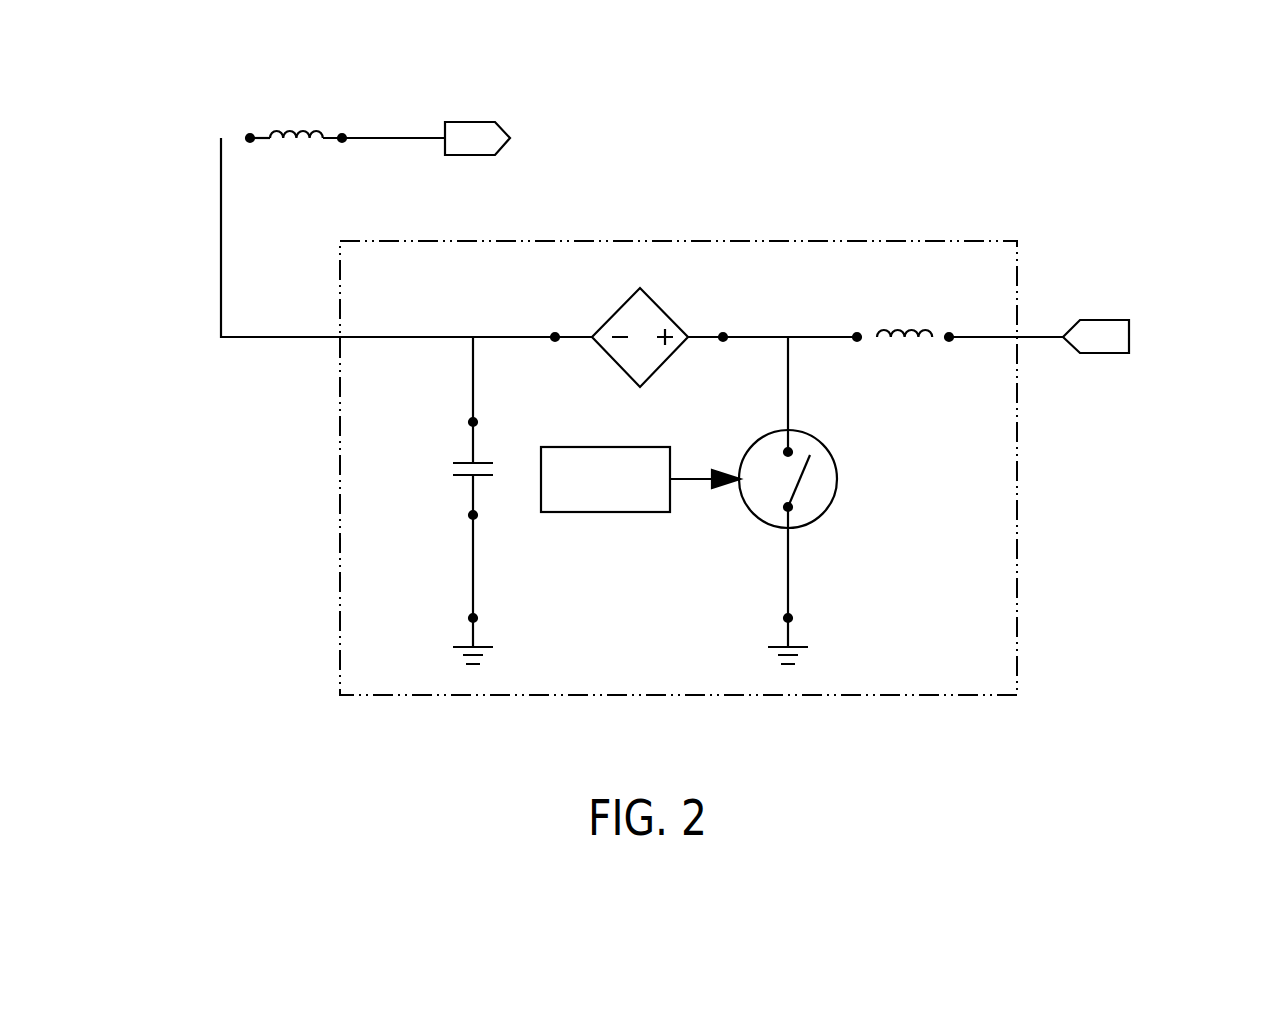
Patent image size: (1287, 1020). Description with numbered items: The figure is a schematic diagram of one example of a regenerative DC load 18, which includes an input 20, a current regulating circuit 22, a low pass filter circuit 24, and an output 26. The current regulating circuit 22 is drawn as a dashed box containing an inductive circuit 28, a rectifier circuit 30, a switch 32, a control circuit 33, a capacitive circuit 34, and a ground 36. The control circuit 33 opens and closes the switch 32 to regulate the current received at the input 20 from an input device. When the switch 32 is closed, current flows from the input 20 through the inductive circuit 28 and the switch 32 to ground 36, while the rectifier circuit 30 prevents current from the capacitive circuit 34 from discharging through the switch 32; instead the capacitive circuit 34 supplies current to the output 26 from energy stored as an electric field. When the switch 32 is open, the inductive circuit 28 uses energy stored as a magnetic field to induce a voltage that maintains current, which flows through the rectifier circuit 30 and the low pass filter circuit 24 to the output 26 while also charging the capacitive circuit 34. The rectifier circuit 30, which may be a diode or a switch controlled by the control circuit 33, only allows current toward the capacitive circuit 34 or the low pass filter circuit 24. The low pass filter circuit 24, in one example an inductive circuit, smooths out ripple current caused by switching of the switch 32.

The regenerative DC load 18 is at (1181, 95).
The input 20 is at (1129, 320).
The current regulating circuit 22 is at (900, 241).
The low pass filter circuit 24 is at (267, 131).
The output 26 is at (495, 123).
The inductive circuit 28 is at (875, 330).
The rectifier circuit 30 is at (618, 312).
The switch 32 is at (816, 518).
The control circuit 33 is at (594, 447).
The capacitive circuit 34 is at (465, 463).
The ground 36 is at (465, 646).